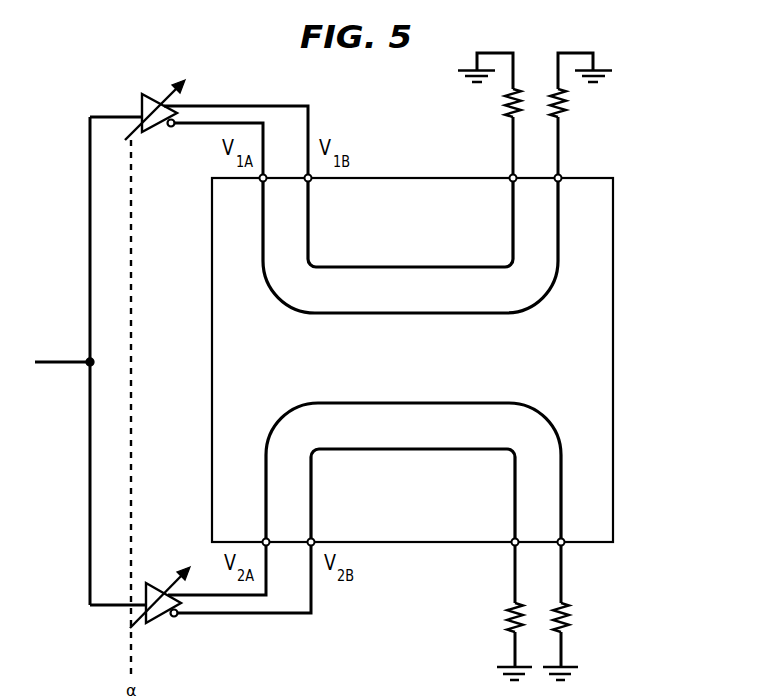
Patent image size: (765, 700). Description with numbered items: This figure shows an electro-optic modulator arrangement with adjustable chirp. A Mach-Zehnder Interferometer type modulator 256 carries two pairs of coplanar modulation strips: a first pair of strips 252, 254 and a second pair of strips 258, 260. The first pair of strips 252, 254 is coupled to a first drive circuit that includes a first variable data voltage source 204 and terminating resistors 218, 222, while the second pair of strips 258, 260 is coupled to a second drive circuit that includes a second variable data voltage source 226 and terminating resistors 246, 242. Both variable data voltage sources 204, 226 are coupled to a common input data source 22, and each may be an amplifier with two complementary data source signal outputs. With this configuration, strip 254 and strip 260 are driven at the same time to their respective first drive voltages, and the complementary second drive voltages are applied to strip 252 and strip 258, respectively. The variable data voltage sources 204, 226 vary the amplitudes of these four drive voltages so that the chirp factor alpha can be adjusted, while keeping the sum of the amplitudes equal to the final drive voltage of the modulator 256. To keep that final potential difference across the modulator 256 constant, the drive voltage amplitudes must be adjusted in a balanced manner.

The input data source 22 is at (42, 363).
The first variable data voltage source 204 is at (160, 120).
The second variable data voltage source 226 is at (162, 612).
The terminating resistor 218 is at (503, 110).
The terminating resistor 222 is at (565, 108).
The terminating resistor 242 is at (508, 620).
The terminating resistor 246 is at (570, 625).
The coplanar modulation strip 252 is at (407, 265).
The coplanar modulation strip 254 is at (417, 314).
The Mach-Zehnder Interferometer type modulator 256 is at (603, 302).
The coplanar modulation strip 258 is at (417, 402).
The coplanar modulation strip 260 is at (410, 452).